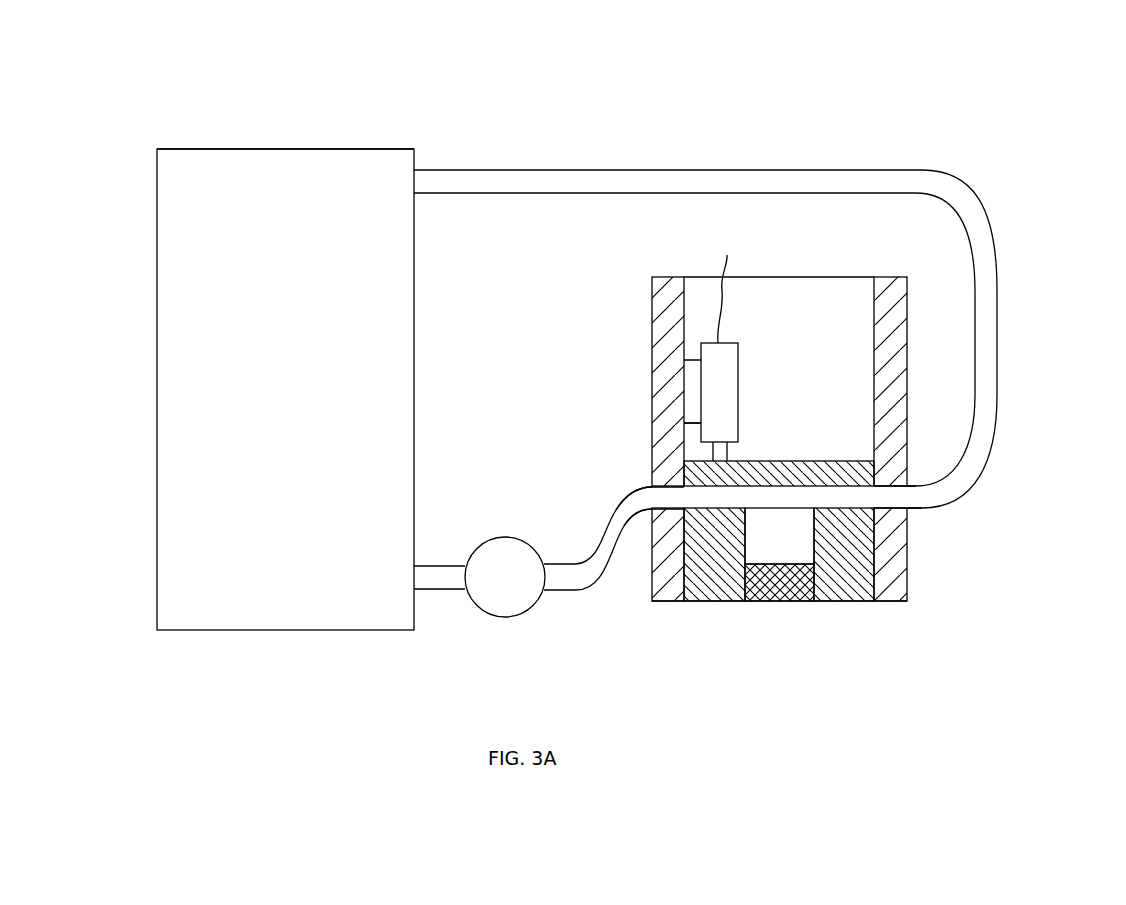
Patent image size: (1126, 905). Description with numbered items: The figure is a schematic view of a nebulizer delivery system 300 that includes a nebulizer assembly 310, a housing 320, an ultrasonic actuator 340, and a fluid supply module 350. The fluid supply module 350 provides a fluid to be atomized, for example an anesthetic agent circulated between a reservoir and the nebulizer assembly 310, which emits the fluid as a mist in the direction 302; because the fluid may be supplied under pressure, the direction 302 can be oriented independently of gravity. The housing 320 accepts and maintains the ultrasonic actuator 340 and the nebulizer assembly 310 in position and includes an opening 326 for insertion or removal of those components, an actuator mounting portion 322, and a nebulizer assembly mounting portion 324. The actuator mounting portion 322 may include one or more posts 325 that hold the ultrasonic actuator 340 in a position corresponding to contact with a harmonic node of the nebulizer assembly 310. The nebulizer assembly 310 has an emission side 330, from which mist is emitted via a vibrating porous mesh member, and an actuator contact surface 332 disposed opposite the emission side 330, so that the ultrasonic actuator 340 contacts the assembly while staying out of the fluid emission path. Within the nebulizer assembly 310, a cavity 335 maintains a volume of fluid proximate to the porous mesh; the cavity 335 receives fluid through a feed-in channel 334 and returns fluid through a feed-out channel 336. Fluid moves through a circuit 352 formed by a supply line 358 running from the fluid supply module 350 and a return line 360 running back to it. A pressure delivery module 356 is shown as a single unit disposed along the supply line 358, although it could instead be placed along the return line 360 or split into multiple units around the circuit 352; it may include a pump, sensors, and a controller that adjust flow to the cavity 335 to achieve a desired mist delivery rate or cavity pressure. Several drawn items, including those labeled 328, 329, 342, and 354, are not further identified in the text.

The nebulizer delivery system 300 is at (1025, 123).
The direction 302 is at (778, 608).
The nebulizer assembly 310 is at (754, 452).
The housing 320 is at (650, 601).
The actuator mounting portion 322 is at (695, 336).
The nebulizer assembly mounting portion 324 is at (666, 612).
The post 325 is at (690, 420).
The opening 326 is at (839, 304).
The inlet tube 328 is at (662, 492).
The outlet tube 329 is at (890, 510).
The emission side 330 is at (843, 602).
The actuator contact surface 332 is at (802, 461).
The feed-in channel 334 is at (723, 500).
The cavity 335 is at (787, 548).
The feed-out channel 336 is at (816, 496).
The ultrasonic actuator 340 is at (738, 390).
The wire 342 is at (727, 255).
The fluid supply module 350 is at (244, 641).
The circuit 352 is at (542, 324).
The reservoir top 354 is at (258, 149).
The pressure delivery module 356 is at (505, 620).
The supply line 358 is at (553, 562).
The return line 360 is at (620, 170).